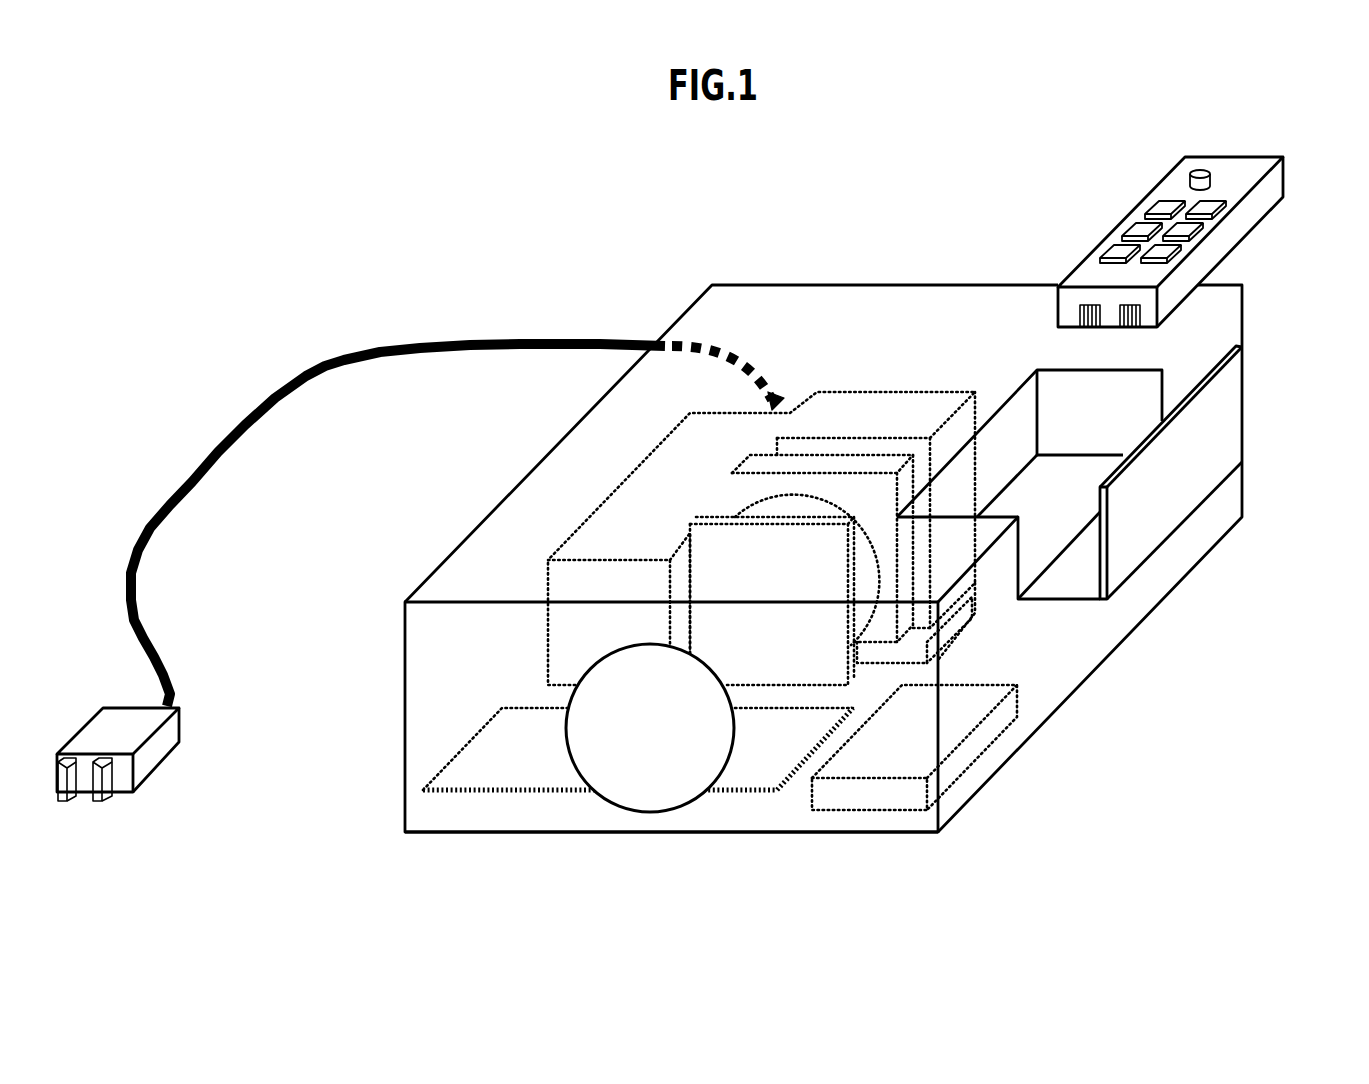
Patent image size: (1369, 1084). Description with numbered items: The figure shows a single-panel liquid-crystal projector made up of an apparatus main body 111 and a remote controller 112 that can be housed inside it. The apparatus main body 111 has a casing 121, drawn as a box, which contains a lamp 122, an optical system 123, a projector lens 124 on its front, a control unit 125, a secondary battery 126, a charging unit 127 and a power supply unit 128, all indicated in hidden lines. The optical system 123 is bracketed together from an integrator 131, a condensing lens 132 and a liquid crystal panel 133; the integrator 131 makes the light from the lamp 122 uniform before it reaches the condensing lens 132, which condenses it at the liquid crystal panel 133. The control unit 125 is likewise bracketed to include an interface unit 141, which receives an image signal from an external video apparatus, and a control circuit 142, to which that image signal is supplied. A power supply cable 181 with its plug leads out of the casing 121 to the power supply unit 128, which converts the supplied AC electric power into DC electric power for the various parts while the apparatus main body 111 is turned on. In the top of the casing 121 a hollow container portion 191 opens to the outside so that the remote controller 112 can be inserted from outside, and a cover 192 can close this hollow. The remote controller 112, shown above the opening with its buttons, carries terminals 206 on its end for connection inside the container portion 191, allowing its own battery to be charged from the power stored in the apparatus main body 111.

The apparatus main body 111 is at (402, 600).
The remote controller 112 is at (1160, 183).
The casing 121 is at (420, 835).
The lamp 122 is at (873, 387).
The optical system 123 is at (497, 388).
The projector lens 124 is at (605, 798).
The control unit 125 is at (412, 802).
The secondary battery 126 is at (955, 768).
The charging unit 127 is at (1218, 665).
The power supply unit 128 is at (547, 645).
The integrator 131 is at (747, 455).
The condensing lens 132 is at (768, 498).
The liquid crystal panel 133 is at (690, 533).
The interface unit 141 is at (955, 620).
The control circuit 142 is at (1083, 623).
The power supply cable 181 is at (220, 416).
The container portion 191 is at (1038, 470).
The cover 192 is at (1250, 396).
The terminals 206 is at (1118, 304).